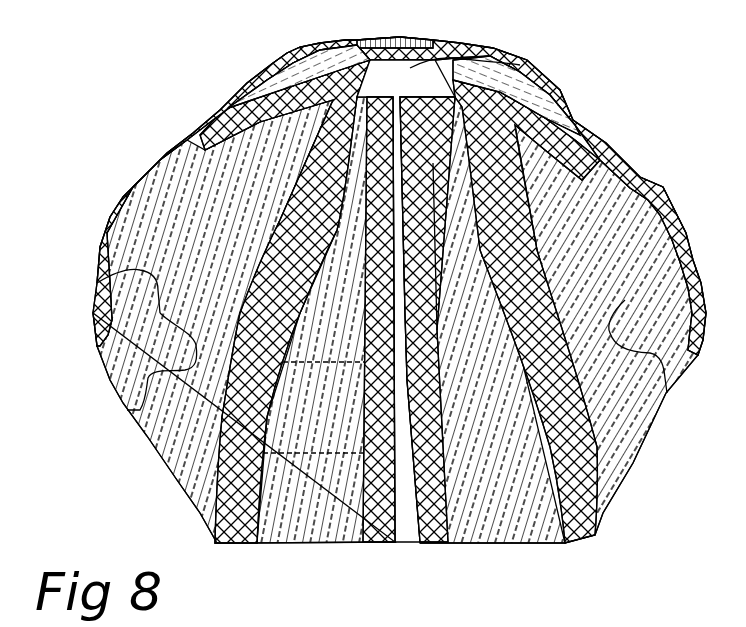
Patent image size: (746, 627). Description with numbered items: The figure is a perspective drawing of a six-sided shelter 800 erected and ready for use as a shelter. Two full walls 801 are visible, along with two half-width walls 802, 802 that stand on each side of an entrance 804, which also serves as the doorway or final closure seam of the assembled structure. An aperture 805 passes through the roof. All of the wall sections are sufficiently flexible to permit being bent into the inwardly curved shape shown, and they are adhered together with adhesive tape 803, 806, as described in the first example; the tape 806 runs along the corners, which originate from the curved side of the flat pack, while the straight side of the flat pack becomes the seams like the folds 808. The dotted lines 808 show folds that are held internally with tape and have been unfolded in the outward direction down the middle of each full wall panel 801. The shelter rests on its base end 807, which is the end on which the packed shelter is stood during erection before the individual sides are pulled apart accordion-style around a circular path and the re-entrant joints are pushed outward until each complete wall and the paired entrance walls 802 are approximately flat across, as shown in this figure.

The six-sided shelter 800 is at (160, 58).
The full wall 801 is at (130, 410).
The half-width wall 802 is at (297, 516).
The adhesive tape 803 is at (213, 525).
The entrance 804 is at (407, 513).
The aperture 805 is at (500, 74).
The adhesive tape 806 is at (118, 200).
The base end 807 is at (118, 393).
The fold 808 is at (97, 283).